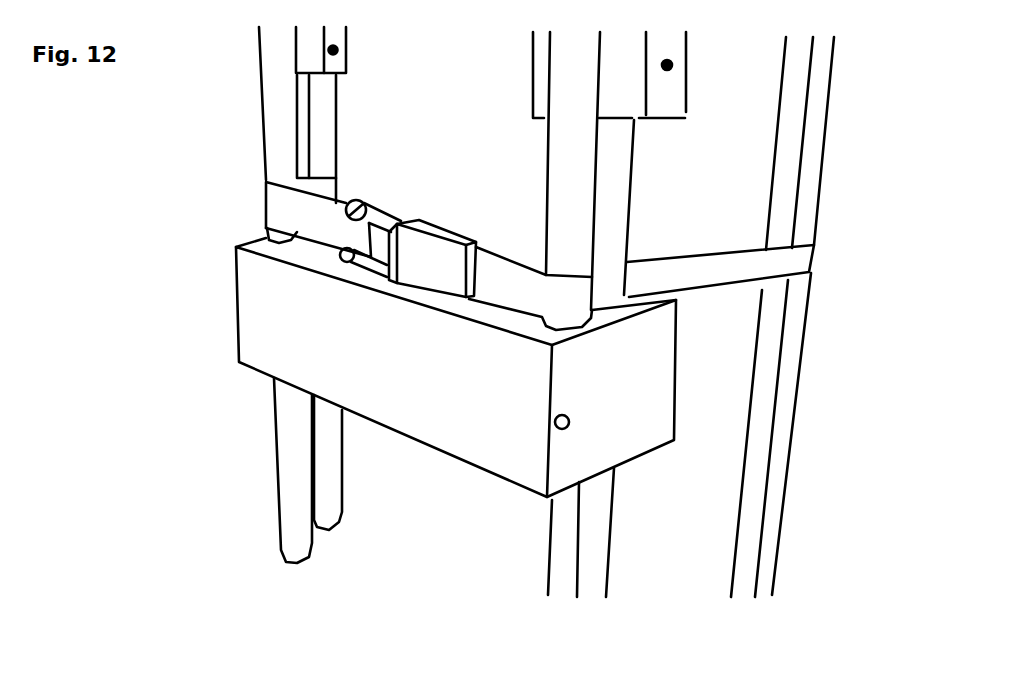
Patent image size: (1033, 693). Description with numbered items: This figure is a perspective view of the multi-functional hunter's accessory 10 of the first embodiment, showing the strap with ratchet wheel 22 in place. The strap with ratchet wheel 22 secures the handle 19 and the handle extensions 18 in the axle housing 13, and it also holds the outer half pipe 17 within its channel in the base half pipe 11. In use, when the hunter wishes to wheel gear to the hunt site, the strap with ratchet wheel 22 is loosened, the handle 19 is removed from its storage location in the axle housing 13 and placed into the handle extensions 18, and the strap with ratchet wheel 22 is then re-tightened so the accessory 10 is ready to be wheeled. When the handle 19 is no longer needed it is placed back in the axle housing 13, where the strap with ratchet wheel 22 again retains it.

The multi-functional hunter's accessory 10 is at (815, 565).
The base half pipe 11 is at (727, 433).
The axle housing 13 is at (235, 325).
The outer half pipe 17 is at (803, 332).
The handle extension 18 is at (607, 592).
The handle 19 is at (550, 563).
The strap with ratchet wheel 22 is at (265, 200).